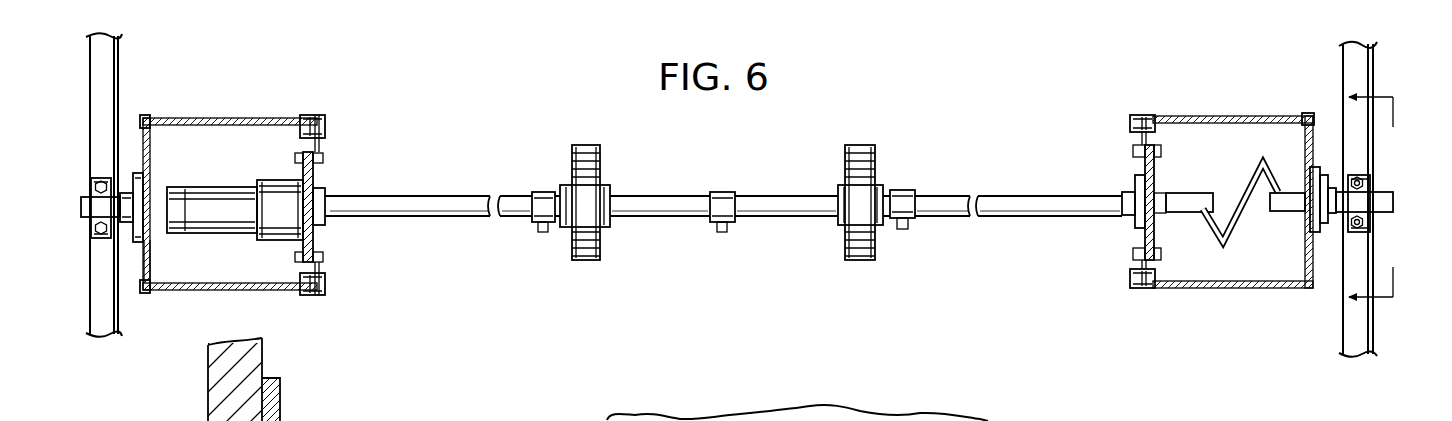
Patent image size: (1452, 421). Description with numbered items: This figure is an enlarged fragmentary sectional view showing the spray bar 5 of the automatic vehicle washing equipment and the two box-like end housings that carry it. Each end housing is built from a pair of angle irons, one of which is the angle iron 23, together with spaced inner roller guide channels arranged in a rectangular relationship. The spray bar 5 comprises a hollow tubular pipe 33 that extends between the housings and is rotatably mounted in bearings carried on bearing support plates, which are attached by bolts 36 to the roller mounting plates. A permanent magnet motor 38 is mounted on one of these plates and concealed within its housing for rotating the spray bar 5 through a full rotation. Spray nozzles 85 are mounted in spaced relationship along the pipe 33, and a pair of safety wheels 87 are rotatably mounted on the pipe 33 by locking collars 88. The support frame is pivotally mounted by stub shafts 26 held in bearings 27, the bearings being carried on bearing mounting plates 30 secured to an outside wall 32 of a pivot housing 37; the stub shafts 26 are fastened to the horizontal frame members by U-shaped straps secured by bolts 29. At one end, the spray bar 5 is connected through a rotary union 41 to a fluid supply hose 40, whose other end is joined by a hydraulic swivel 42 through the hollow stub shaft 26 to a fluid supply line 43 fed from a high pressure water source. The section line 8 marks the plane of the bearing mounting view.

The spray bar 5 is at (659, 192).
The section line 8- 8 is at (1376, 198).
The angle iron 23 is at (148, 294).
The stub shaft 26 is at (92, 226).
The bearing 27 is at (1372, 222).
The bolt 29 is at (1362, 180).
The bearing mounting plate 30 is at (1318, 232).
The outside wall 32 is at (150, 258).
The hollow tubular pipe 33 is at (758, 199).
The bolt 36 is at (319, 150).
The pivot housing 37 is at (258, 116).
The permanent magnet motor 38 is at (220, 192).
The fluid supply hose 40 is at (1216, 226).
The rotary union 41 is at (1196, 200).
The hydraulic swivel 42 is at (1283, 208).
The fluid supply line 43 is at (1392, 202).
The spray nozzle 85 is at (540, 223).
The safety wheel 87 is at (601, 256).
The locking collar 88 is at (566, 228).